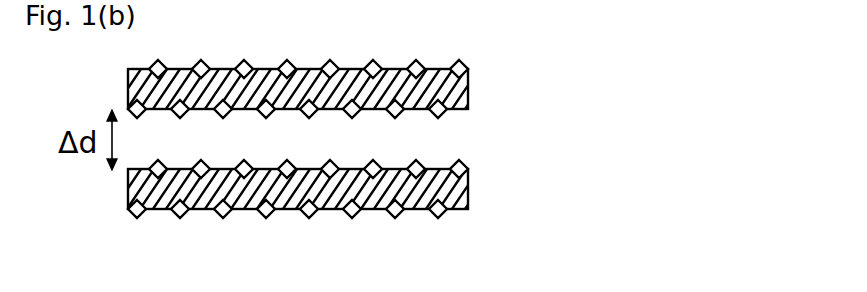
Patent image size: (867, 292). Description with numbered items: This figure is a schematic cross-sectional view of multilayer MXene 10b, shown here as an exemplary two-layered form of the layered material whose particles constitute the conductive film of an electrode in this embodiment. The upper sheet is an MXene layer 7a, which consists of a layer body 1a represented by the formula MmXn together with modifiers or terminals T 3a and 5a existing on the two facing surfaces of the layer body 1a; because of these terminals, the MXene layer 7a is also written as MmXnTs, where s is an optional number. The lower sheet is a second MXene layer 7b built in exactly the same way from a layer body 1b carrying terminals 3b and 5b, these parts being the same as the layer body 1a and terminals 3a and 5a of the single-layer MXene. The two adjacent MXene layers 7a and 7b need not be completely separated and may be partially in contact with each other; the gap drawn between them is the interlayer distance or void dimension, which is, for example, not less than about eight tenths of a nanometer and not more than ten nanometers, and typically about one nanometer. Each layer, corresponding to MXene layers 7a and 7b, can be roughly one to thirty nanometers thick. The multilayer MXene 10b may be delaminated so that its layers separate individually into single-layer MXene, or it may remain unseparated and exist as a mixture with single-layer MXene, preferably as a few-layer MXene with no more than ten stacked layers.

The layer body 1a is at (467, 82).
The modifier or terminal T 3a is at (462, 64).
The modifier or terminal T 5a is at (445, 112).
The MXene layer 7a is at (583, 47).
The layer body 1b is at (467, 182).
The modifier or terminal T 3b is at (462, 164).
The modifier or terminal T 5b is at (445, 212).
The MXene layer 7b is at (583, 147).
The multilayer MXene 10b is at (616, 228).